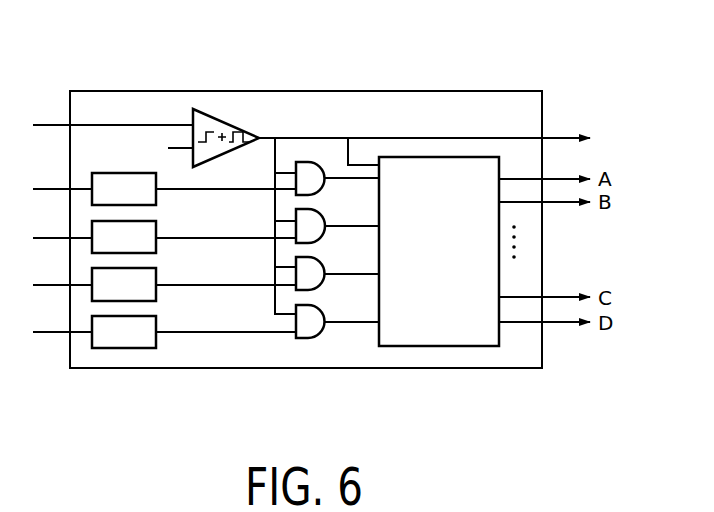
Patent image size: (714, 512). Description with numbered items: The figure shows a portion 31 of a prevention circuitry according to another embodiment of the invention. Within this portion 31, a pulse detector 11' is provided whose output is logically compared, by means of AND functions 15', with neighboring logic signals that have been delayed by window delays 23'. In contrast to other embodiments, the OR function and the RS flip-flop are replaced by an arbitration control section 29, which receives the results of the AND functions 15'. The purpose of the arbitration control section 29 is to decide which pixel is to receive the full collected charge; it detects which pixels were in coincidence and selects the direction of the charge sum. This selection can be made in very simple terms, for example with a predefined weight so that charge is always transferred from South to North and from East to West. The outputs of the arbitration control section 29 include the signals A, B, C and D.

The portion of a prevention circuitry 31 is at (345, 90).
The pulse detector 11' is at (226, 102).
The window delays 23' is at (194, 260).
The AND functions 15' is at (337, 250).
The arbitration control section 29 is at (422, 346).